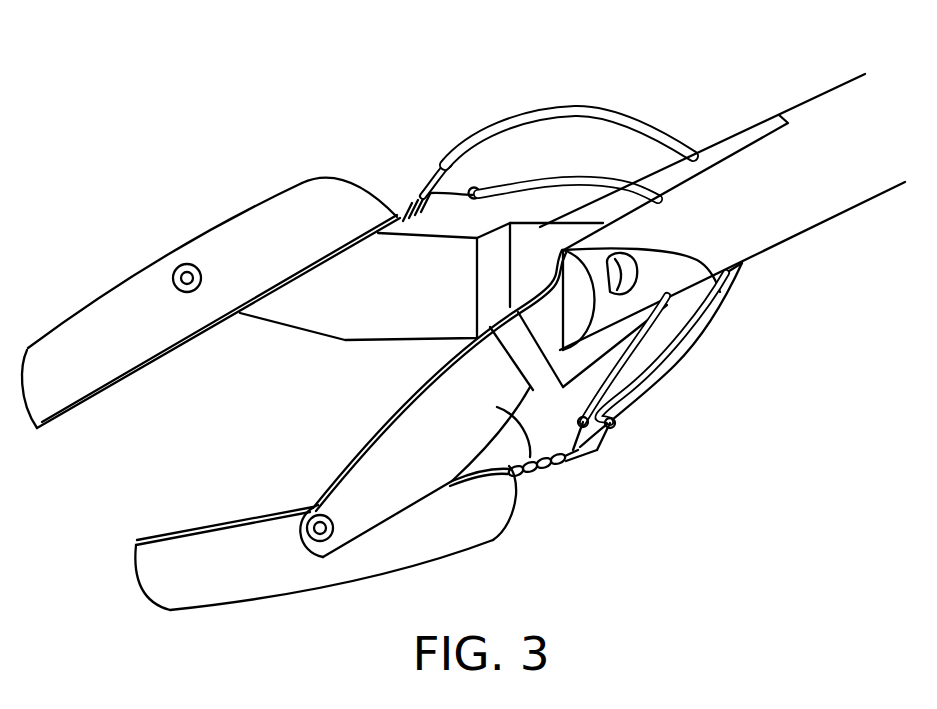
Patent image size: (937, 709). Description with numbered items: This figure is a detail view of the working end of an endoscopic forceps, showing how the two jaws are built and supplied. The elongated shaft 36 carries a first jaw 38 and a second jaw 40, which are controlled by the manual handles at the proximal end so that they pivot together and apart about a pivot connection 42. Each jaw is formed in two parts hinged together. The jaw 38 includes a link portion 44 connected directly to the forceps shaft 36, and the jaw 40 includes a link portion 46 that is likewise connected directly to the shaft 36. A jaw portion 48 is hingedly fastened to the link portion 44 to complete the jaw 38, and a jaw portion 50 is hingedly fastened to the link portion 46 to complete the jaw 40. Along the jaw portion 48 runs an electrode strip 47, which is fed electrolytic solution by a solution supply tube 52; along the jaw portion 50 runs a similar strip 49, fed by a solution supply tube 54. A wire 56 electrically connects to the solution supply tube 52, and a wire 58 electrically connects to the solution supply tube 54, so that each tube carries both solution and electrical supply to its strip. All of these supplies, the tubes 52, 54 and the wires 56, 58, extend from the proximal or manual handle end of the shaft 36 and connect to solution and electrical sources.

The elongated shaft 36 is at (818, 207).
The jaw 38 is at (430, 257).
The jaw 40 is at (523, 477).
The pivot connection 42 is at (723, 287).
The link portion 44 is at (357, 323).
The link portion 46 is at (377, 465).
The electrode strip 47 is at (110, 387).
The jaw portion 48 is at (95, 323).
The strip 49 is at (213, 523).
The jaw portion 50 is at (188, 577).
The solution supply tube 52 is at (557, 110).
The solution supply tube 54 is at (687, 367).
The wire 56 is at (517, 188).
The wire 58 is at (617, 402).